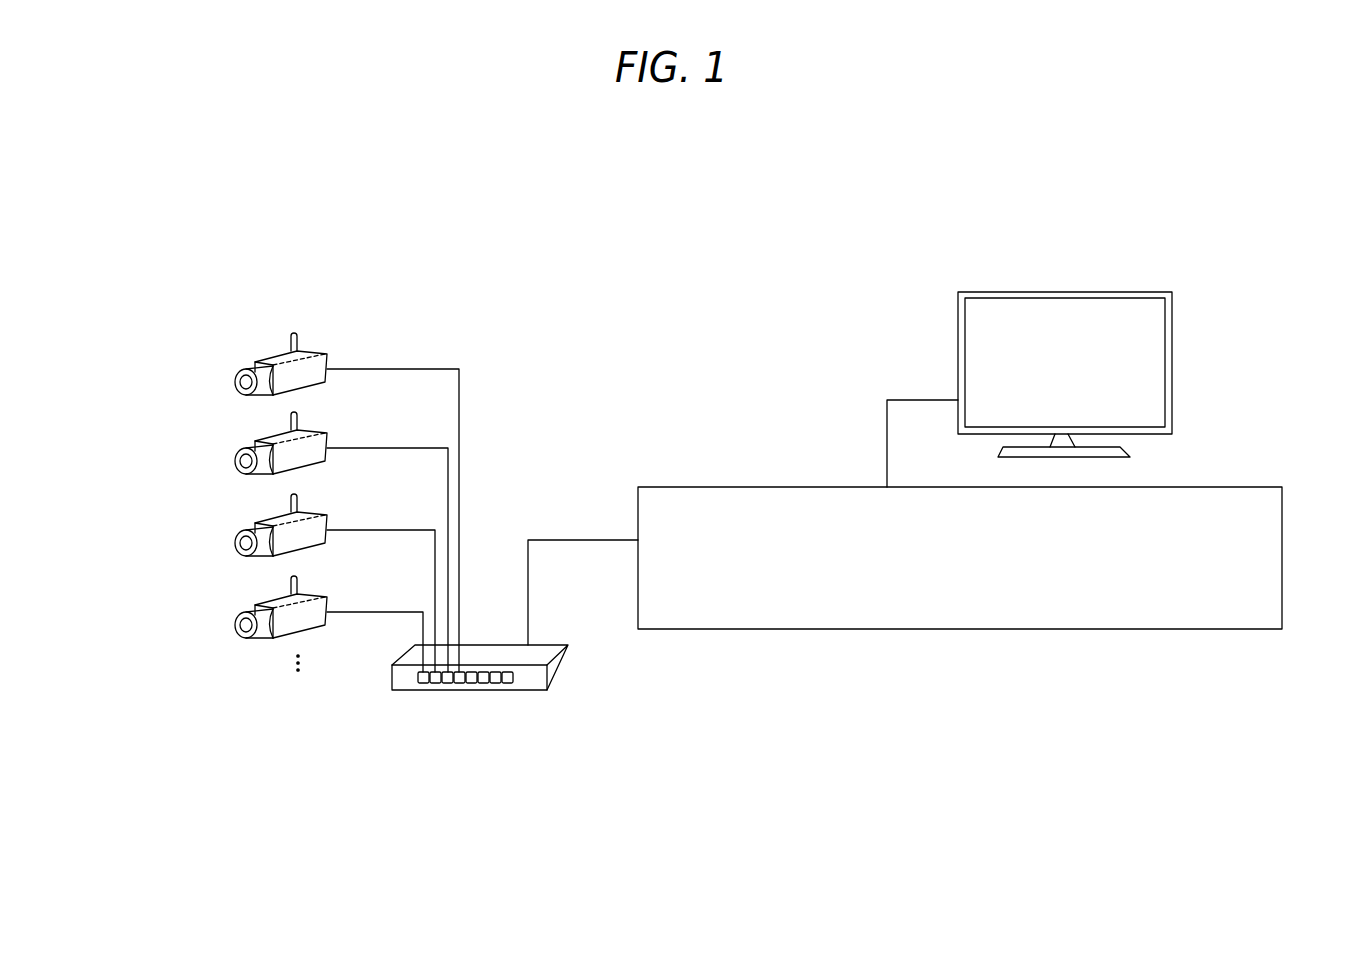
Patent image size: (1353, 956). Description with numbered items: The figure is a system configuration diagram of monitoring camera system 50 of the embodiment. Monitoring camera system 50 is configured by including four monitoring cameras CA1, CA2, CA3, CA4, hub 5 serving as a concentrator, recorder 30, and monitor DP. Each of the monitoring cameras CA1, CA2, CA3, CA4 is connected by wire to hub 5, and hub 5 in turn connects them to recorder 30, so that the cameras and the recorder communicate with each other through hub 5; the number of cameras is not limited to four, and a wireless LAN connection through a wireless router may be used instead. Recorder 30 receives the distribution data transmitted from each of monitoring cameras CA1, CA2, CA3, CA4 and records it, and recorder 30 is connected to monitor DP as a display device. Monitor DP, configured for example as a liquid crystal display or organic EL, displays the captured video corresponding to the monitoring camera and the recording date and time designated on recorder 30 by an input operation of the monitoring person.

The monitoring camera system 50 is at (643, 303).
The monitoring camera CA1 is at (327, 359).
The monitoring camera CA2 is at (327, 443).
The monitoring camera CA3 is at (327, 525).
The monitoring camera CA4 is at (327, 608).
The hub 5 is at (570, 657).
The recorder 30 is at (778, 487).
The monitor DP is at (958, 348).